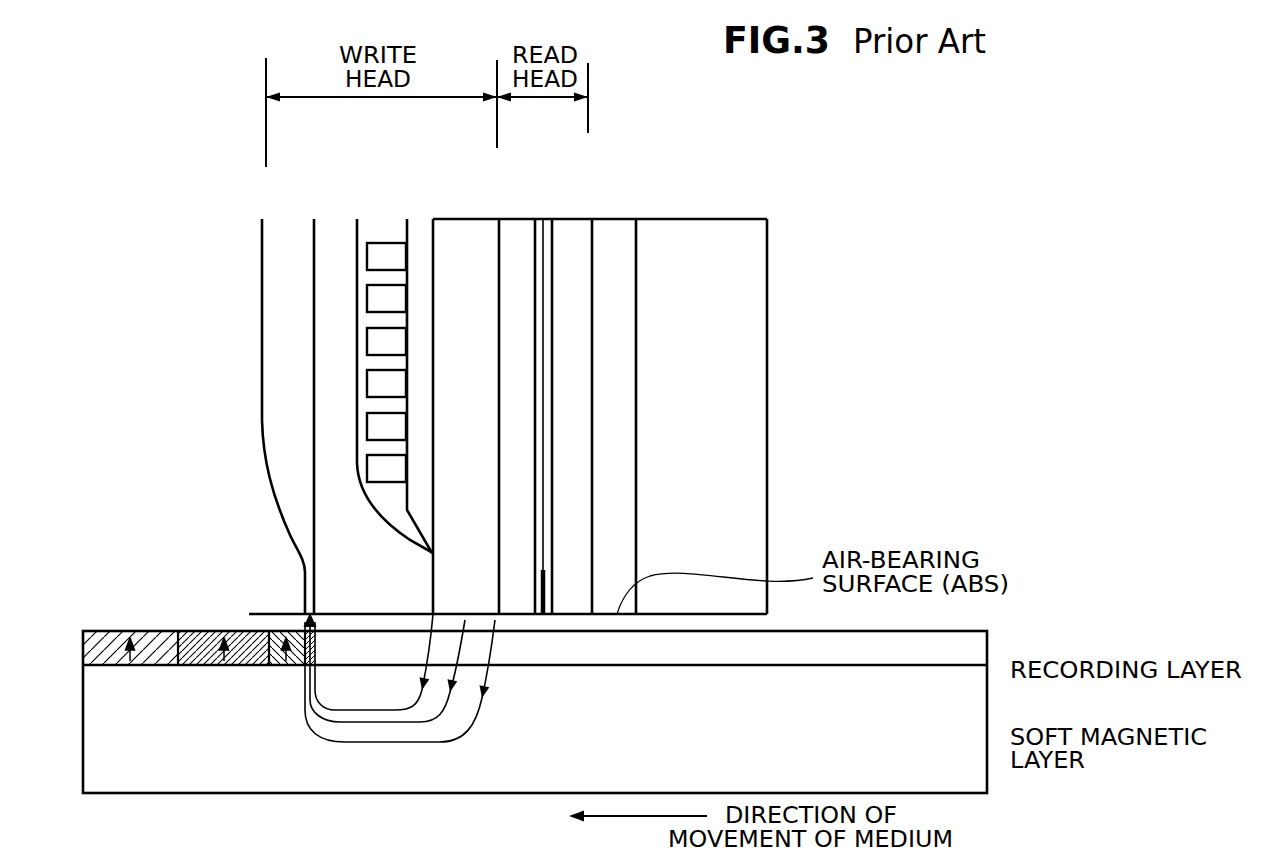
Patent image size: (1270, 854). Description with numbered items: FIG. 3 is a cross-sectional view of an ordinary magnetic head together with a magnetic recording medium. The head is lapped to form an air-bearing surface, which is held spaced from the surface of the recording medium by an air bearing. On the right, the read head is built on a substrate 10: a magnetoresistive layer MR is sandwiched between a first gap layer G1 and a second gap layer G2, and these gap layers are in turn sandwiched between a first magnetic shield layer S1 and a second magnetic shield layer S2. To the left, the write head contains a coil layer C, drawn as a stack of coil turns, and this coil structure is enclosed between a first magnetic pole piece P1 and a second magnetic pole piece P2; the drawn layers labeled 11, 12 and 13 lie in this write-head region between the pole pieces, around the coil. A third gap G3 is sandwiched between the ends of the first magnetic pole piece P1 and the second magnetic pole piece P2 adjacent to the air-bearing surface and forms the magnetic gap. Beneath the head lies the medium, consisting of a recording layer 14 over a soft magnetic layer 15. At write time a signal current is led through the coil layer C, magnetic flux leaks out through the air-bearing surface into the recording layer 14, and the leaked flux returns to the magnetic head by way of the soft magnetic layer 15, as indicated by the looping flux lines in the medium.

The substrate 10 is at (697, 230).
The insulating layer 11 is at (422, 386).
The coil layer 12 is at (395, 386).
The yoke 13 is at (331, 416).
The recording layer 14 is at (962, 652).
The soft magnetic layer 15 is at (962, 717).
The first magnetic pole piece P1 is at (466, 416).
The second magnetic pole piece P2 is at (283, 416).
The first magnetic shield layer S1 is at (568, 416).
The second magnetic shield layer S2 is at (519, 416).
The first gap layer G1 is at (548, 219).
The second gap layer G2 is at (541, 219).
The third gap G3 is at (508, 600).
The magnetoresistive layer MR is at (548, 587).
The coil layer C is at (386, 362).